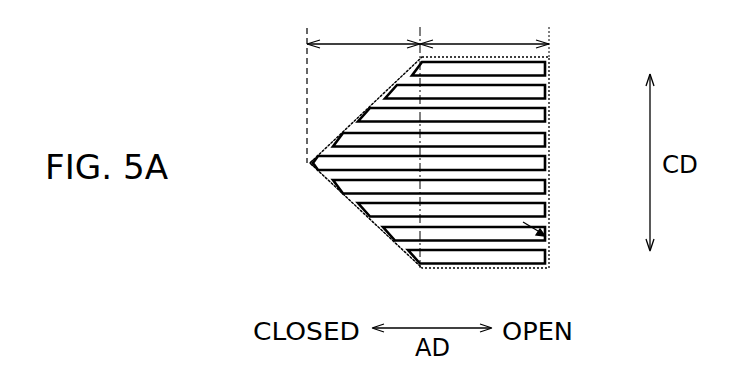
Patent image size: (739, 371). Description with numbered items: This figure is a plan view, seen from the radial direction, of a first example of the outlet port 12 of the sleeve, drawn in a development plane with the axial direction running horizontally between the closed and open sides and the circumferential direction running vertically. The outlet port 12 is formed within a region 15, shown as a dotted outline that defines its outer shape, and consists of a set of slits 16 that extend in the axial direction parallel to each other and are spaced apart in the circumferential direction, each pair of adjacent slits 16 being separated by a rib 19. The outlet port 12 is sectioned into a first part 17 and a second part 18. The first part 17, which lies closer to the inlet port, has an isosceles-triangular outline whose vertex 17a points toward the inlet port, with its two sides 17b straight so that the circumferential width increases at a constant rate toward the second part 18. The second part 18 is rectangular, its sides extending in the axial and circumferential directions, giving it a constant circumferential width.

The outlet port 12 is at (292, 72).
The region 15 is at (548, 98).
The slit 16 is at (544, 210).
The first part 17 is at (348, 44).
The vertex 17a is at (308, 163).
The side 17b is at (344, 124).
The second part 18 is at (460, 44).
The rib 19 is at (552, 226).